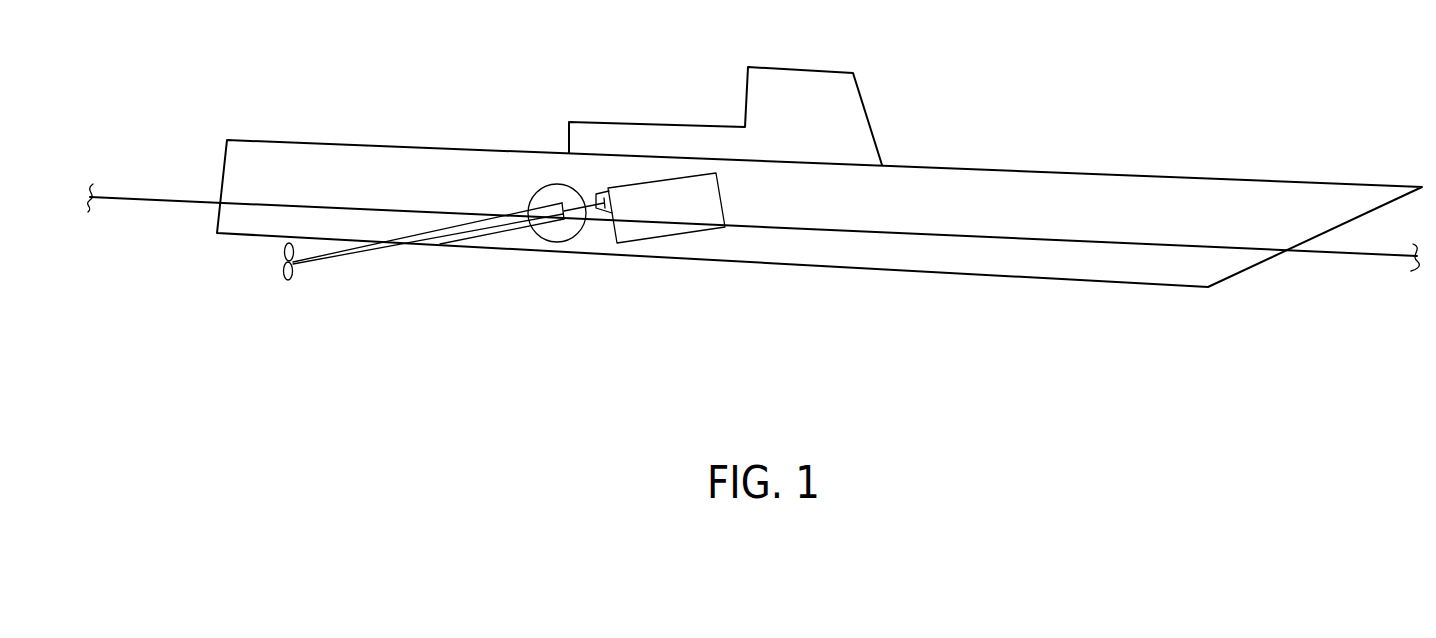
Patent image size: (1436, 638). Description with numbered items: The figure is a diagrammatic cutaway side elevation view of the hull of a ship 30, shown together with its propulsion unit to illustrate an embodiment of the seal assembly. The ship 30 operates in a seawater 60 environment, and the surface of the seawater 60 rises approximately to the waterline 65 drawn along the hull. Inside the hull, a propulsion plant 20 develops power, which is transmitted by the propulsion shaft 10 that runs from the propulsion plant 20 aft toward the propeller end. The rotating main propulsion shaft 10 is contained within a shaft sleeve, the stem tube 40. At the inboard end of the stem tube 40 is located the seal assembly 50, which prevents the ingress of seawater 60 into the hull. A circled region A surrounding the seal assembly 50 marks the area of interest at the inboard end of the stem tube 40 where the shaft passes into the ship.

The propulsion shaft 10 is at (310, 266).
The propulsion plant 20 is at (704, 196).
The ship 30 is at (240, 198).
The stem tube 40 is at (503, 213).
The seal assembly 50 is at (570, 247).
The seawater 60 is at (183, 263).
The waterline 65 is at (1352, 257).
The detail region A is at (543, 238).